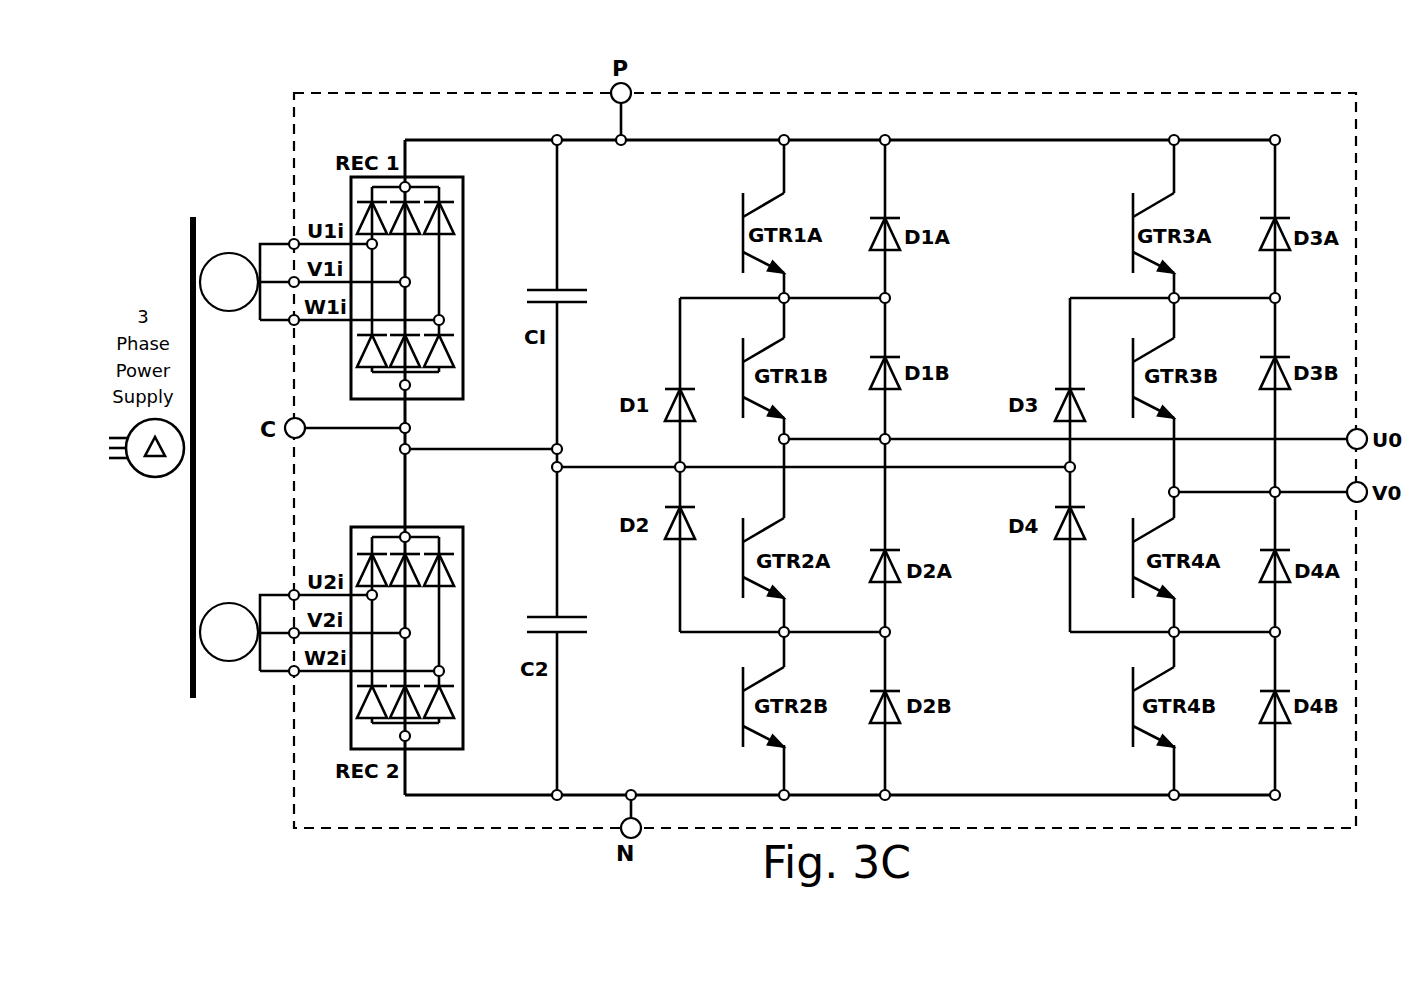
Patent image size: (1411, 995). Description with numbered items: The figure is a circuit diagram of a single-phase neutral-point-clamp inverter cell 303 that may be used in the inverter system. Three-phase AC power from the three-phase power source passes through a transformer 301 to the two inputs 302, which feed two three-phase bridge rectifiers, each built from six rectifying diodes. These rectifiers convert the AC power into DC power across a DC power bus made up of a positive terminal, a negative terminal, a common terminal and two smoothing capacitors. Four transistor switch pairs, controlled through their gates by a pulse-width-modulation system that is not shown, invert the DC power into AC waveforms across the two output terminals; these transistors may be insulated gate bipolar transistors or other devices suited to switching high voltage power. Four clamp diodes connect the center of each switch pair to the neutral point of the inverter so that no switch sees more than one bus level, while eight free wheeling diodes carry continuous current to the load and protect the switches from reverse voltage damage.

The transformer 301 is at (224, 433).
The inputs 302 is at (229, 457).
The inverter cell 303 is at (814, 440).